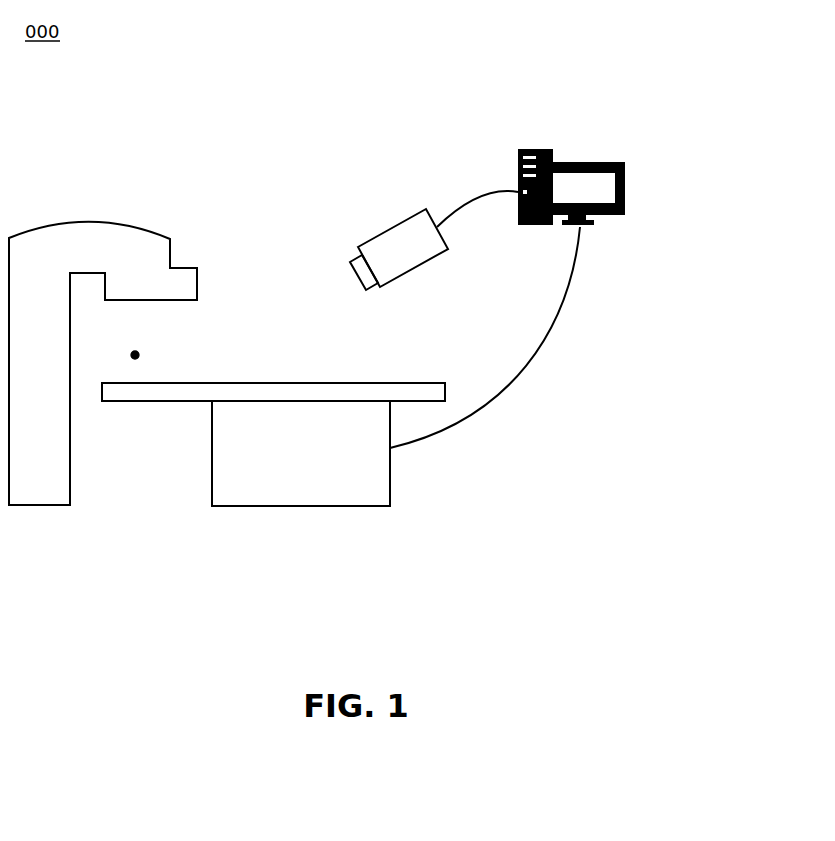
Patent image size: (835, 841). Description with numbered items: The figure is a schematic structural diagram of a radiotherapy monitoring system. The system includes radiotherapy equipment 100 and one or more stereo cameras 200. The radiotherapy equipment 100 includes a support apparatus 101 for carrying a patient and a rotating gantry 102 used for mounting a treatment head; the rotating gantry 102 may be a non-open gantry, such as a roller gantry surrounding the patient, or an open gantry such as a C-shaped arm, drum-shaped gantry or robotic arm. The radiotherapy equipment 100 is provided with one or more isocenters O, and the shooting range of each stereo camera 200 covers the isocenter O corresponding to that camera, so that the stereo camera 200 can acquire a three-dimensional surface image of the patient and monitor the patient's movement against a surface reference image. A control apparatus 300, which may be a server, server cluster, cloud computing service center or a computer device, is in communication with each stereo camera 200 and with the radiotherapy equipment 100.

The radiotherapy equipment 100 is at (42, 586).
The support apparatus 101 is at (293, 477).
The rotating gantry 102 is at (42, 475).
The stereo camera 200 is at (395, 232).
The control apparatus 300 is at (637, 186).
The isocenter O is at (135, 338).